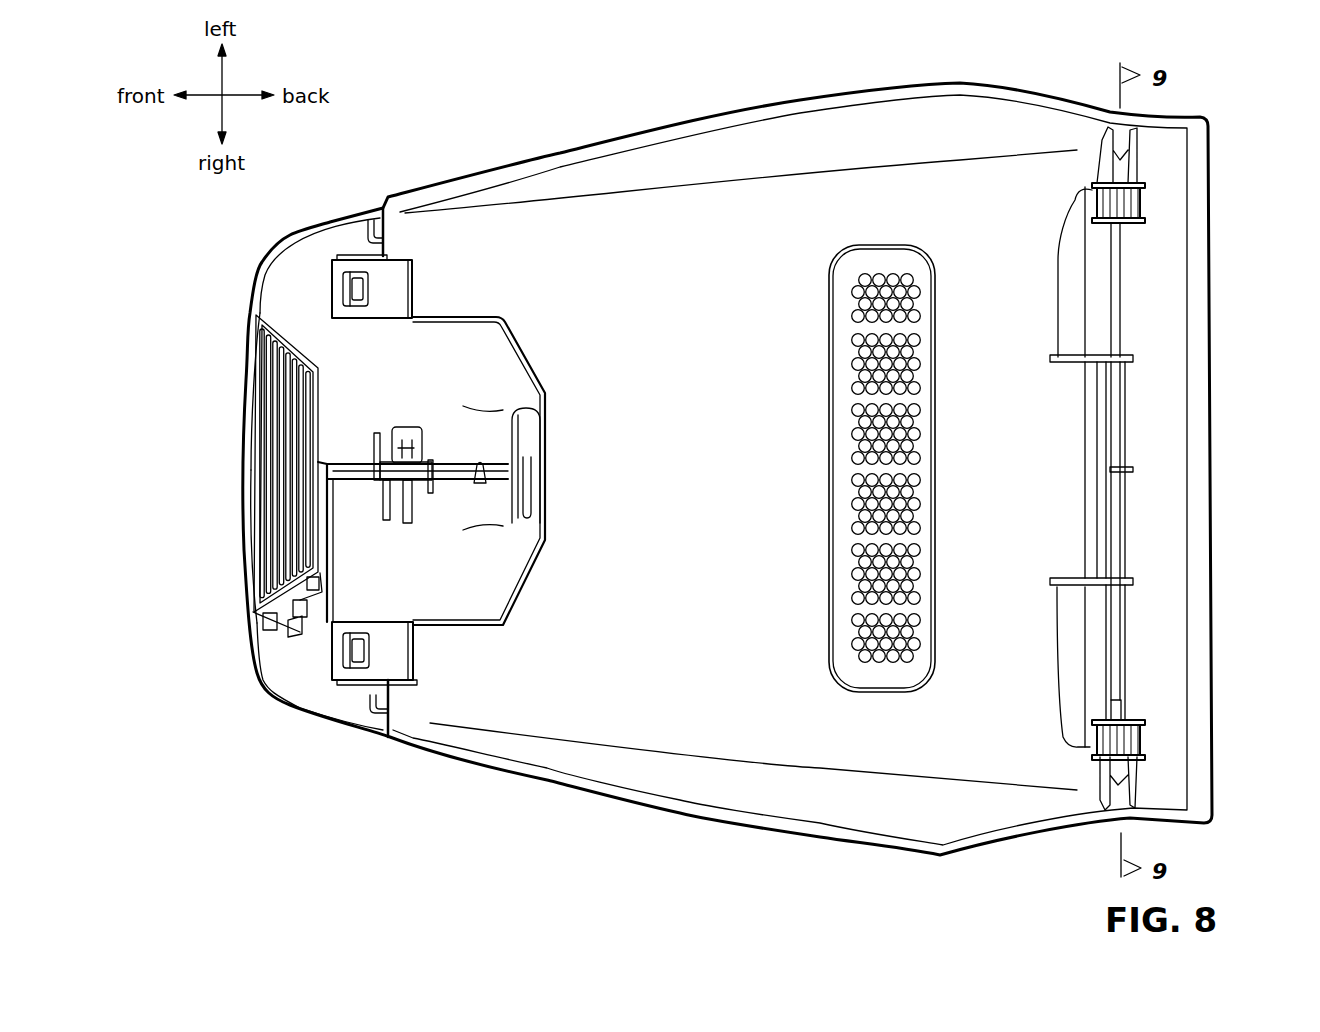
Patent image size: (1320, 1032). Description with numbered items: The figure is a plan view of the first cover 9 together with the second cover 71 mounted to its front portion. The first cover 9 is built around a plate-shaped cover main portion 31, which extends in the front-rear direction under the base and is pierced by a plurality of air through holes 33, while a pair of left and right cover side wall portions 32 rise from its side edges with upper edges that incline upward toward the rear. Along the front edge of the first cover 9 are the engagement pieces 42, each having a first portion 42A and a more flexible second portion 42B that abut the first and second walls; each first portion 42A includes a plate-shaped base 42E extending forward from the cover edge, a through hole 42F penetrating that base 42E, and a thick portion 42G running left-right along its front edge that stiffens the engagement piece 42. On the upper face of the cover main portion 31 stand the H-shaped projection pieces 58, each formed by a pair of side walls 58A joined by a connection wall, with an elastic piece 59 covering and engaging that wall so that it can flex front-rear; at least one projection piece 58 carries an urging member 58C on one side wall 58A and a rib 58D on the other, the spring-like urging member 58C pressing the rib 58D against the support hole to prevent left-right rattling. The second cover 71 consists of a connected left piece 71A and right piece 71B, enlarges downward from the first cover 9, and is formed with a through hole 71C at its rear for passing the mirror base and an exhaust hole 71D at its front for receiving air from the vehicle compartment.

The first cover 9 is at (692, 122).
The cover main portion 31 is at (640, 210).
The cover side wall portions 32 is at (766, 140).
The air through holes 33 is at (855, 523).
The engagement pieces 42 is at (329, 432).
The first portion 42A is at (383, 316).
The second portion 42B is at (332, 313).
The base 42E is at (403, 288).
The through hole 42F is at (358, 633).
The thick portion 42G is at (338, 290).
The projection pieces 58 is at (1132, 468).
The side walls 58A is at (1090, 745).
The urging member 58C is at (1143, 717).
The rib 58D is at (1117, 765).
The elastic piece 59 is at (1137, 227).
The second cover 71 is at (260, 685).
The left piece 71A is at (305, 683).
The right piece 71B is at (288, 263).
The through hole 71C is at (517, 432).
The exhaust hole 71D is at (262, 457).